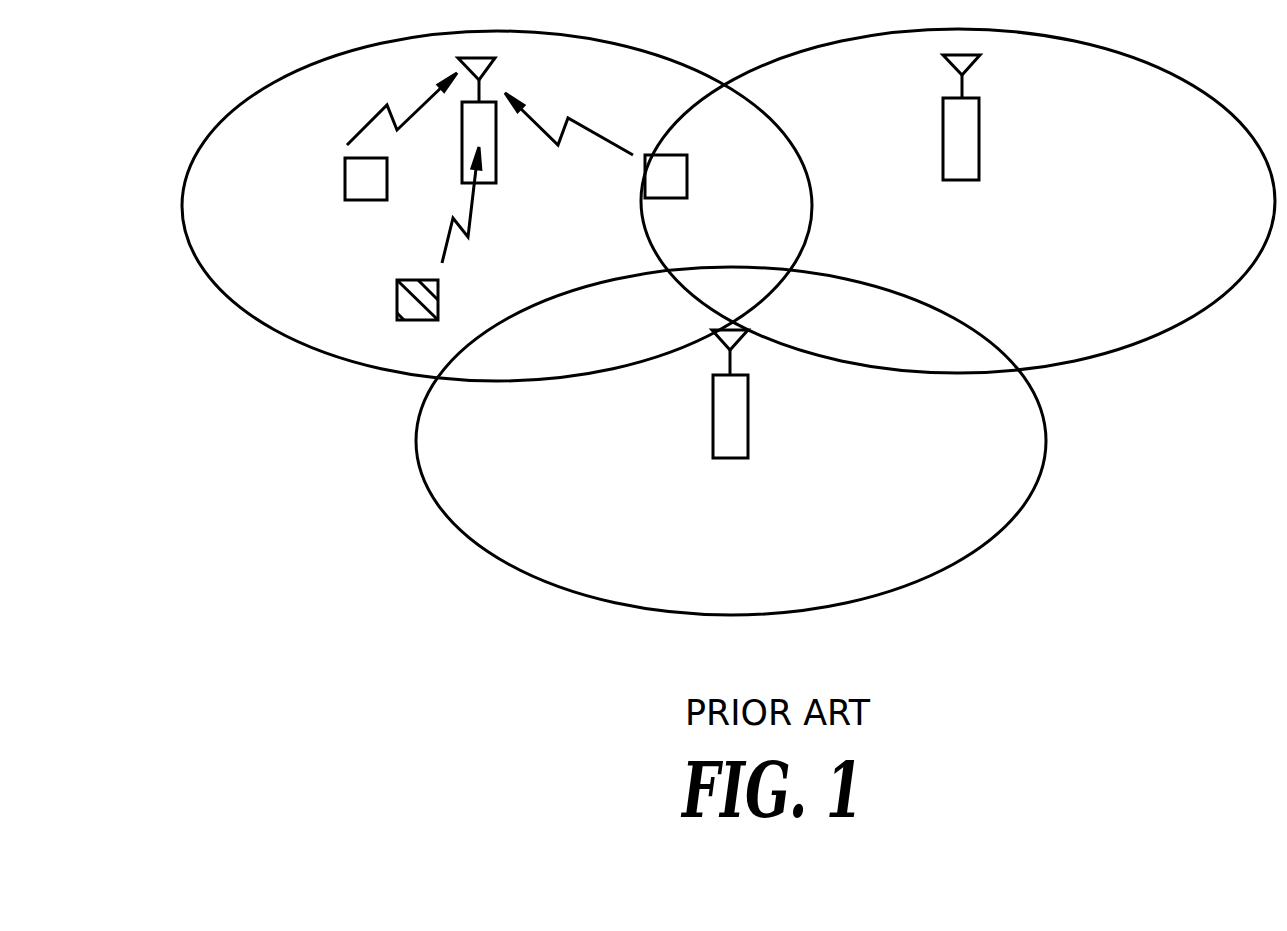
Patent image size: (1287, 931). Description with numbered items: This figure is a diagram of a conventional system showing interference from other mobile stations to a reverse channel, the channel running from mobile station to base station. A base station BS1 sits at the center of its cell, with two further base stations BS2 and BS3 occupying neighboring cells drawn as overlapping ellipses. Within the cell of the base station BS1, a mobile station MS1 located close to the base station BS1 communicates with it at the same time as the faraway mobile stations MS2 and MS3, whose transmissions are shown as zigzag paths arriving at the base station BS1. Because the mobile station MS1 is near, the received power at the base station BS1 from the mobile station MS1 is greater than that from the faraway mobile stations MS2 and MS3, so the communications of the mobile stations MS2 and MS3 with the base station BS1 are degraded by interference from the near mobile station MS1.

The base station BS1 is at (513, 120).
The base station 2 BS2 is at (767, 394).
The base station 3 BS3 is at (998, 117).
The mobile station MS1 is at (396, 156).
The mobile station MS2 is at (431, 255).
The mobile station MS3 is at (602, 164).